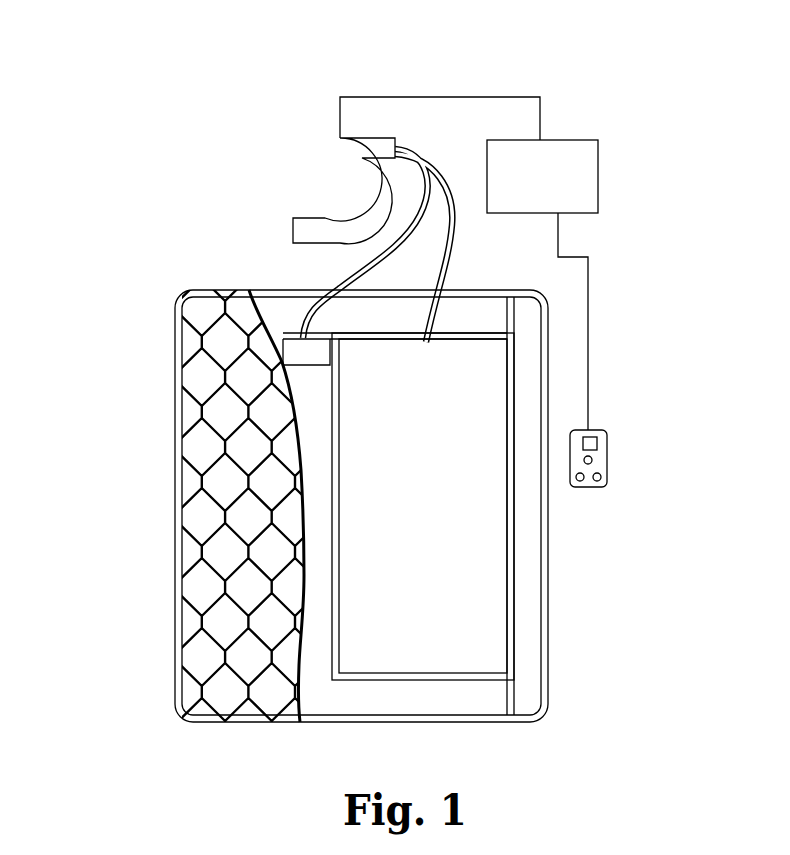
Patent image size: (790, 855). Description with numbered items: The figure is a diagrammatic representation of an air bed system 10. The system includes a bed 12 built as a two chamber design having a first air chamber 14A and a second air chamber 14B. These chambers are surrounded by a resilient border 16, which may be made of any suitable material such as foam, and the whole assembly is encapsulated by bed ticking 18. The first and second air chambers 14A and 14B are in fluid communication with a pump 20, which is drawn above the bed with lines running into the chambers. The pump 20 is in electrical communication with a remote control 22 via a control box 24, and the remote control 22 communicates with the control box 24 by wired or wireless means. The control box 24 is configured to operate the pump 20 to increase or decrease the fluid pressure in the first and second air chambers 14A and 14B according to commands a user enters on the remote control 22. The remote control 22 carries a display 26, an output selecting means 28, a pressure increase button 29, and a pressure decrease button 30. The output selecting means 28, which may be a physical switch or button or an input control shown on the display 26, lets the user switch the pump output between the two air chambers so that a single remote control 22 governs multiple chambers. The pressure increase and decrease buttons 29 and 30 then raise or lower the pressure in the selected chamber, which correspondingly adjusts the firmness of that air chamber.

The air bed system 10 is at (270, 54).
The bed 12 is at (140, 571).
The first air chamber 14A is at (395, 349).
The second air chamber 14B is at (444, 538).
The resilient border 16 is at (527, 580).
The bed ticking 18 is at (200, 509).
The pump 20 is at (308, 161).
The remote control 22 is at (626, 476).
The control box 24 is at (566, 140).
The display 26 is at (592, 443).
The output selecting means 28 is at (593, 461).
The pressure increase button 29 is at (581, 488).
The pressure decrease button 30 is at (601, 488).